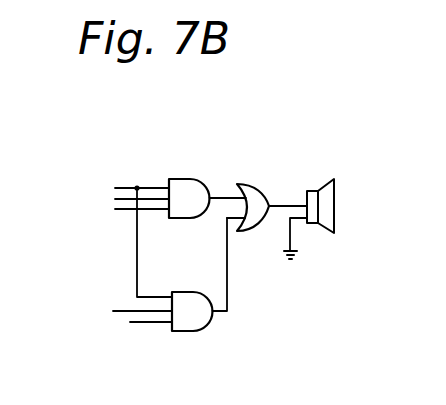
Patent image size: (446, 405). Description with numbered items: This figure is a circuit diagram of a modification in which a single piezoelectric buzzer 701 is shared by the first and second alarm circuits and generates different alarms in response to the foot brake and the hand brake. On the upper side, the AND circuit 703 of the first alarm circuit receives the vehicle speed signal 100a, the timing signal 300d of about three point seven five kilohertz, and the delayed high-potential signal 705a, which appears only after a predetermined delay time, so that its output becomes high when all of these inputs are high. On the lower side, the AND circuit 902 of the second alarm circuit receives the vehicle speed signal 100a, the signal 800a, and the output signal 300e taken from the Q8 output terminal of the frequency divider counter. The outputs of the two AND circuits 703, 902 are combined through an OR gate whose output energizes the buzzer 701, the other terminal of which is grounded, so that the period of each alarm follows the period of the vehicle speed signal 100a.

The vehicle speed signal 100a is at (134, 187).
The timing signal 300d is at (116, 198).
The high-potential signal 705a is at (122, 212).
The AND circuit 703 is at (188, 180).
The piezoelectric buzzer 701 is at (334, 192).
The output signal 300e is at (108, 310).
The signal 800a is at (137, 325).
The AND circuit 902 is at (192, 332).